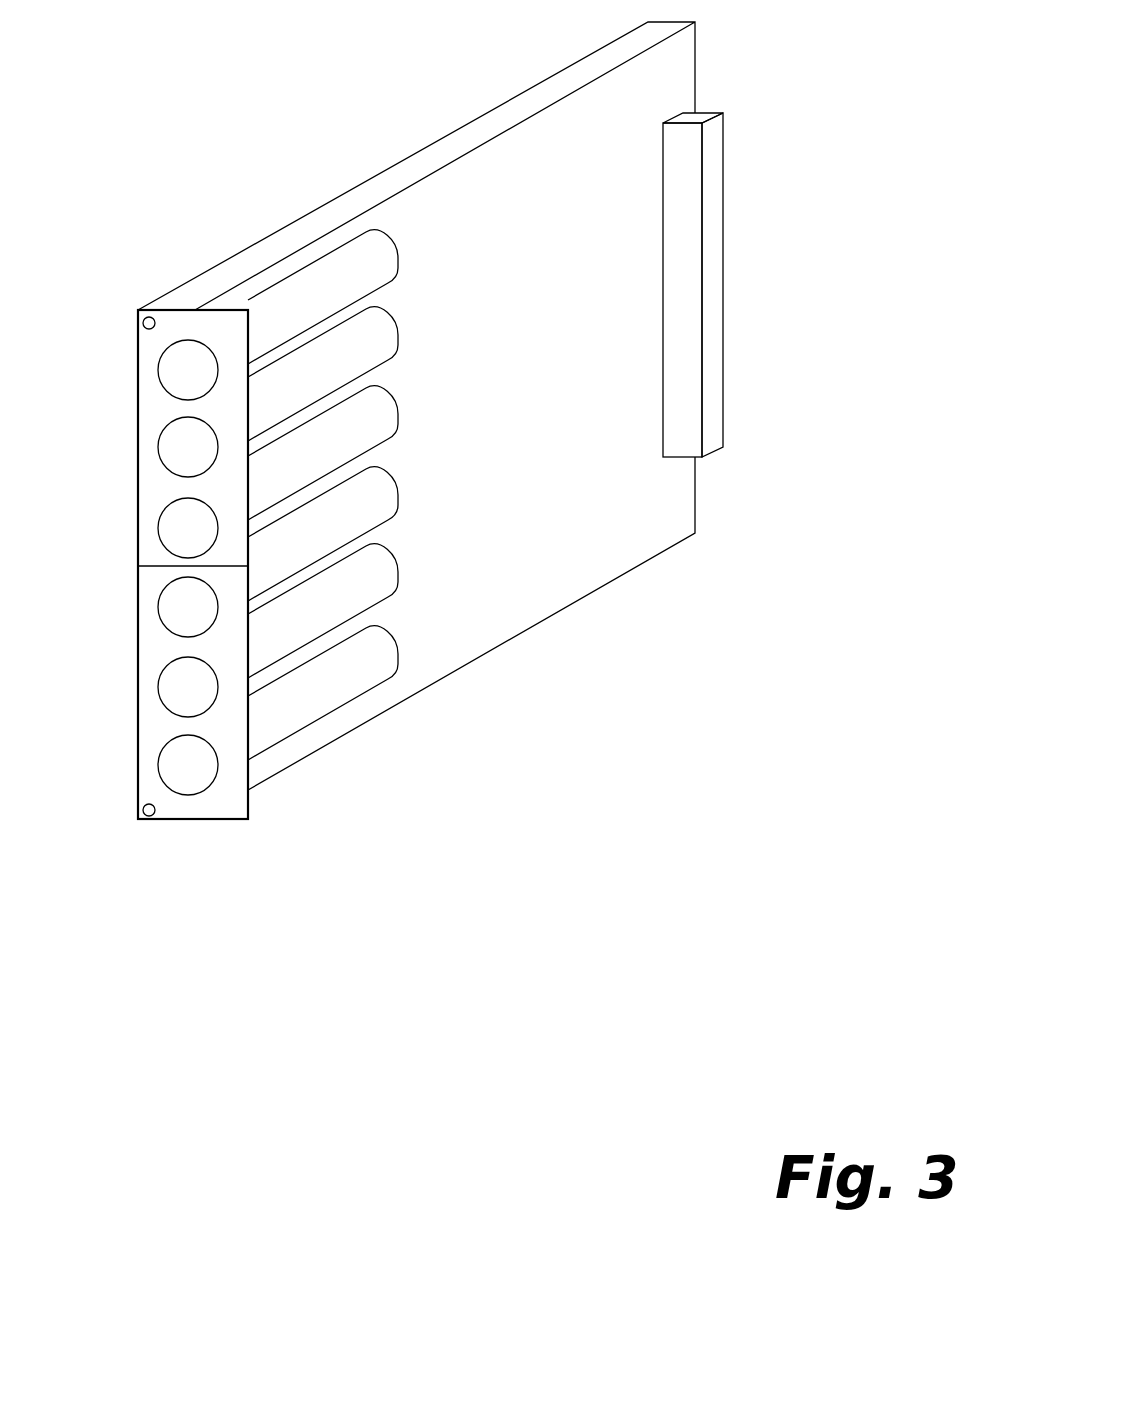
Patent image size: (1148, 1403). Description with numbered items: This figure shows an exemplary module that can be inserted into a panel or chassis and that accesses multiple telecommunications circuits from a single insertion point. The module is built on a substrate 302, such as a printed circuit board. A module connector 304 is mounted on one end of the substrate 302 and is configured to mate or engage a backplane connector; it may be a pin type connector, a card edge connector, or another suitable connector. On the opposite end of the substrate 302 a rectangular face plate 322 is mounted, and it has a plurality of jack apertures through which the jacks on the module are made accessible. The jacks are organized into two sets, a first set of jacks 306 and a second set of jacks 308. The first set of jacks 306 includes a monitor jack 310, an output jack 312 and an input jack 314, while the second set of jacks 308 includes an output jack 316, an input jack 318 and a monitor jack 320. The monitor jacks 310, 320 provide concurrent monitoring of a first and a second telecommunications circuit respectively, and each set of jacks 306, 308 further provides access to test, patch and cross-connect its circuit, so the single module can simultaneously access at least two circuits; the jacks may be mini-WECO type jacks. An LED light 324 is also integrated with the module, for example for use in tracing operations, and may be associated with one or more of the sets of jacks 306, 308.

The substrate 302 is at (551, 520).
The module connector 304 is at (742, 231).
The first set of jacks 306 is at (108, 333).
The second set of jacks 308 is at (108, 578).
The monitor jack 310 is at (323, 297).
The output jack 312 is at (323, 374).
The input jack 314 is at (323, 453).
The output jack 316 is at (323, 534).
The input jack 318 is at (323, 611).
The monitor jack 320 is at (323, 693).
The rectangular face plate 322 is at (193, 660).
The LED light 324 is at (154, 830).